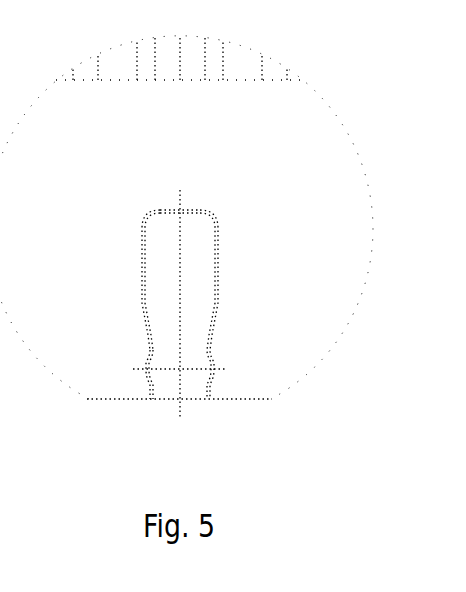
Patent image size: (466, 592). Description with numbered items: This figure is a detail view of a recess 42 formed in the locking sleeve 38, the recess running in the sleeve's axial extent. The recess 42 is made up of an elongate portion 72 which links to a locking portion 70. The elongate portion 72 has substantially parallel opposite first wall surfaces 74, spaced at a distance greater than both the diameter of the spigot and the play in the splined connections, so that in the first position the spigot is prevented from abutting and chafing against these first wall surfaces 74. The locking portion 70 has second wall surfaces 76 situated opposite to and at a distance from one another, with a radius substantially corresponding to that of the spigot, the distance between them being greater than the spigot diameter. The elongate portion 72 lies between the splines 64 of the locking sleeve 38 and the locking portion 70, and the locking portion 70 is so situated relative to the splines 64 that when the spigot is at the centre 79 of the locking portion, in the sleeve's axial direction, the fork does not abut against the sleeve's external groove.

The locking sleeve 38 is at (314, 163).
The splines 64 is at (213, 55).
The elongate portion 72 is at (192, 240).
The first wall surfaces 74 is at (145, 275).
The recess 42 is at (283, 240).
The second wall surfaces 76 is at (147, 373).
The locking portion 70 is at (170, 385).
The centre 79 is at (180, 372).